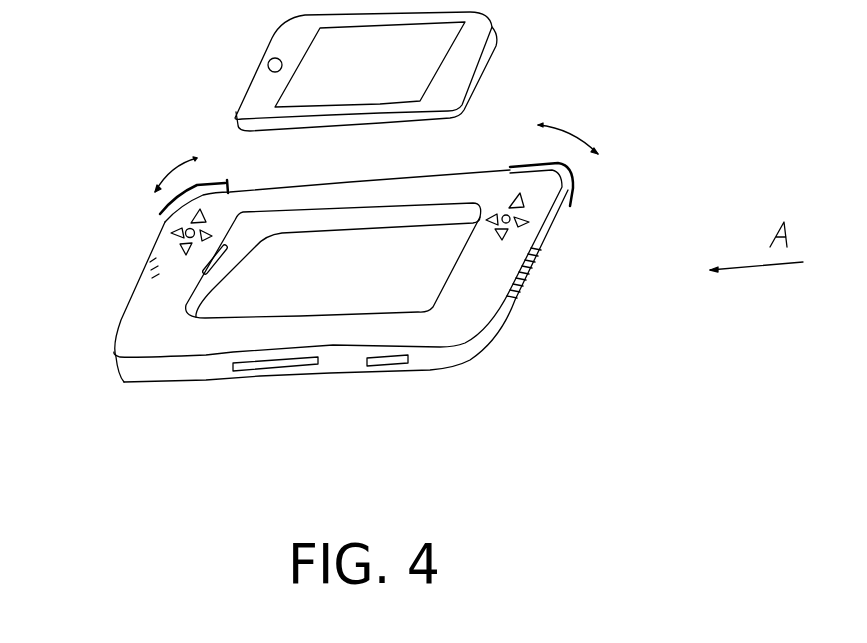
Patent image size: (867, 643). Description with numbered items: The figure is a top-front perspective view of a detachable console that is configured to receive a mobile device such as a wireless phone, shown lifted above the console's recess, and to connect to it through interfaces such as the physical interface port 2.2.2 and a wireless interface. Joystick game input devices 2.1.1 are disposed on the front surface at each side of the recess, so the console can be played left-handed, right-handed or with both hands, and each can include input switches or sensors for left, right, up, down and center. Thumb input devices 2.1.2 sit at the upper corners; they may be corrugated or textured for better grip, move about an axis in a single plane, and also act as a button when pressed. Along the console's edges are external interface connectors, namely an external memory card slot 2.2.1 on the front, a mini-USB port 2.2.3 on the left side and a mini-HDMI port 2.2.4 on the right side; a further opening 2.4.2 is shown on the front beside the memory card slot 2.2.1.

The joystick game input device 2.1.1 is at (180, 235).
The thumb input device 2.1.2 is at (163, 210).
The external memory card slot 2.2.1 is at (268, 373).
The physical interface port 2.2.2 is at (220, 258).
The mini-USB port 2.2.3 is at (148, 277).
The mini-HDMI port 2.2.4 is at (532, 277).
The connector opening 2.4.2 is at (390, 363).